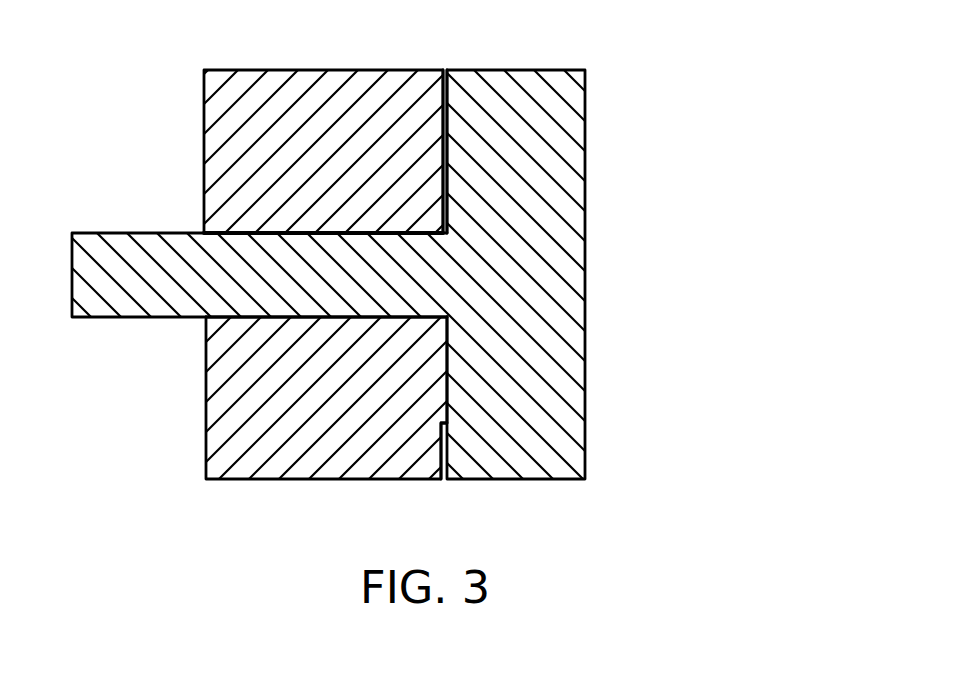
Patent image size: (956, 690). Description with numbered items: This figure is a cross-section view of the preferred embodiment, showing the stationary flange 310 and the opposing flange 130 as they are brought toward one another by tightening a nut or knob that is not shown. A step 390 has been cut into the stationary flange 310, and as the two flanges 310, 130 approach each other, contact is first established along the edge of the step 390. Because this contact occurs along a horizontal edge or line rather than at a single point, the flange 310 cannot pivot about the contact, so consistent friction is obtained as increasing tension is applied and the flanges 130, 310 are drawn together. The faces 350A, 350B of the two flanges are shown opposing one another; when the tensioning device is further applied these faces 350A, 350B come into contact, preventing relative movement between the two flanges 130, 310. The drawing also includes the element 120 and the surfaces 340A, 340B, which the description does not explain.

The conductive layer / interconnect line 120 is at (100, 319).
The dielectric body / substrate region 130 is at (587, 398).
The dielectric layer portions 310 is at (207, 413).
The lower interface surface 340A is at (232, 320).
The upper interface surface 340B is at (312, 231).
The left sidewall of gap 350A is at (442, 66).
The right sidewall of gap 350B is at (448, 66).
The bottom notch / void 390 is at (443, 481).